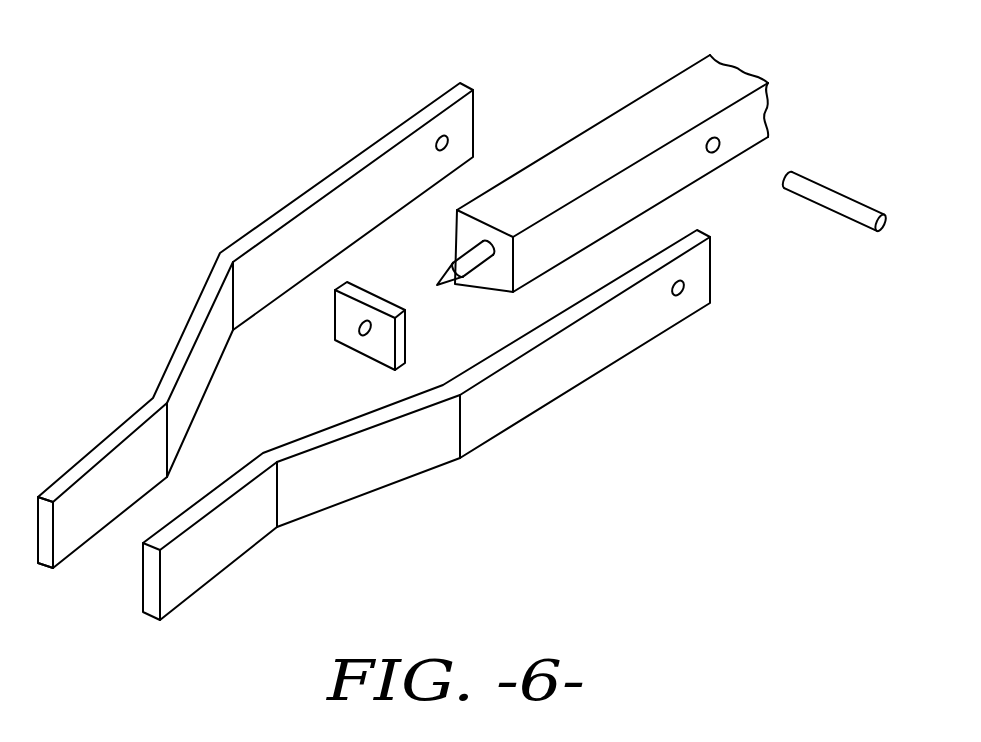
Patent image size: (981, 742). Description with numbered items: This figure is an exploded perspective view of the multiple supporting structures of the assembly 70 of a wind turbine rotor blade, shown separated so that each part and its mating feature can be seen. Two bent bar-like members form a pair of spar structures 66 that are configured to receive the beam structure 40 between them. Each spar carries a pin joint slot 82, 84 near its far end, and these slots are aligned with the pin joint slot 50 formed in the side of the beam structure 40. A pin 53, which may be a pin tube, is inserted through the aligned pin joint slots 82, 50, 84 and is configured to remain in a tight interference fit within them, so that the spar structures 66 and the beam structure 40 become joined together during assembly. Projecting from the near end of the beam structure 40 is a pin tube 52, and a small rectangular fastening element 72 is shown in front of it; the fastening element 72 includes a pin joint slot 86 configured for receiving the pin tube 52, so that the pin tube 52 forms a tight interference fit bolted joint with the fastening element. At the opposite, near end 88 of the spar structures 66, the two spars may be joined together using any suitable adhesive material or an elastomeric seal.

The assembly 70 is at (164, 74).
The spar structures 66 is at (240, 245).
The pin joint slot 84 is at (447, 133).
The pin joint slot 82 is at (687, 290).
The end 88 is at (73, 583).
The beam structure 40 is at (658, 102).
The pin joint slot 50 is at (718, 148).
The pin 53 is at (827, 197).
The pin tube 52 is at (447, 272).
The rectangular fastening element 72 is at (355, 288).
The pin joint slot 86 is at (353, 343).